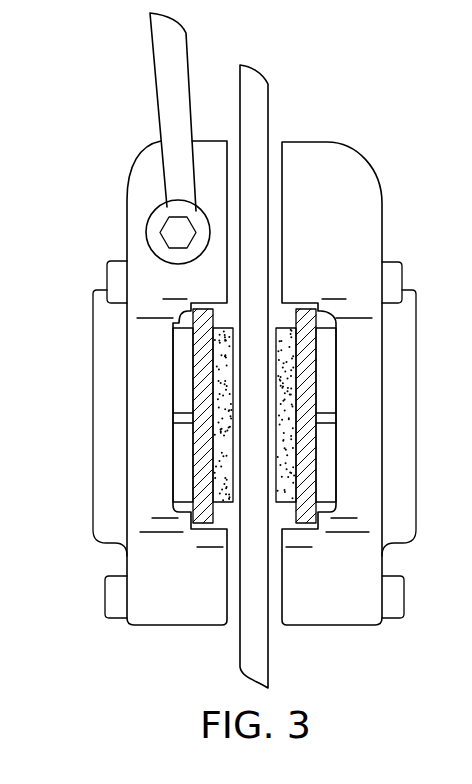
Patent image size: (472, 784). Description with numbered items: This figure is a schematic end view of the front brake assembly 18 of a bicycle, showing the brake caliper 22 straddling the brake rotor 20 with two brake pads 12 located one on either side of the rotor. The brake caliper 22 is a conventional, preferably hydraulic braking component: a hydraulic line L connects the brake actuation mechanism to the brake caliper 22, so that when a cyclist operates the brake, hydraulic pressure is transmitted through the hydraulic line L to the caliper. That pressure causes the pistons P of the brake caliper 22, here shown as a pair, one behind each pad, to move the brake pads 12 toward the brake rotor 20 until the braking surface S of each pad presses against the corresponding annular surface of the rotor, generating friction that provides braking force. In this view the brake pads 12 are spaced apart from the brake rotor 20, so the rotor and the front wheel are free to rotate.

The front brake assembly 18 is at (135, 172).
The brake caliper 22 is at (337, 195).
The brake rotor 20 is at (252, 648).
The brake pads 12 is at (303, 318).
The hydraulic line L is at (172, 88).
The pistons P is at (182, 462).
The braking surface S is at (235, 370).